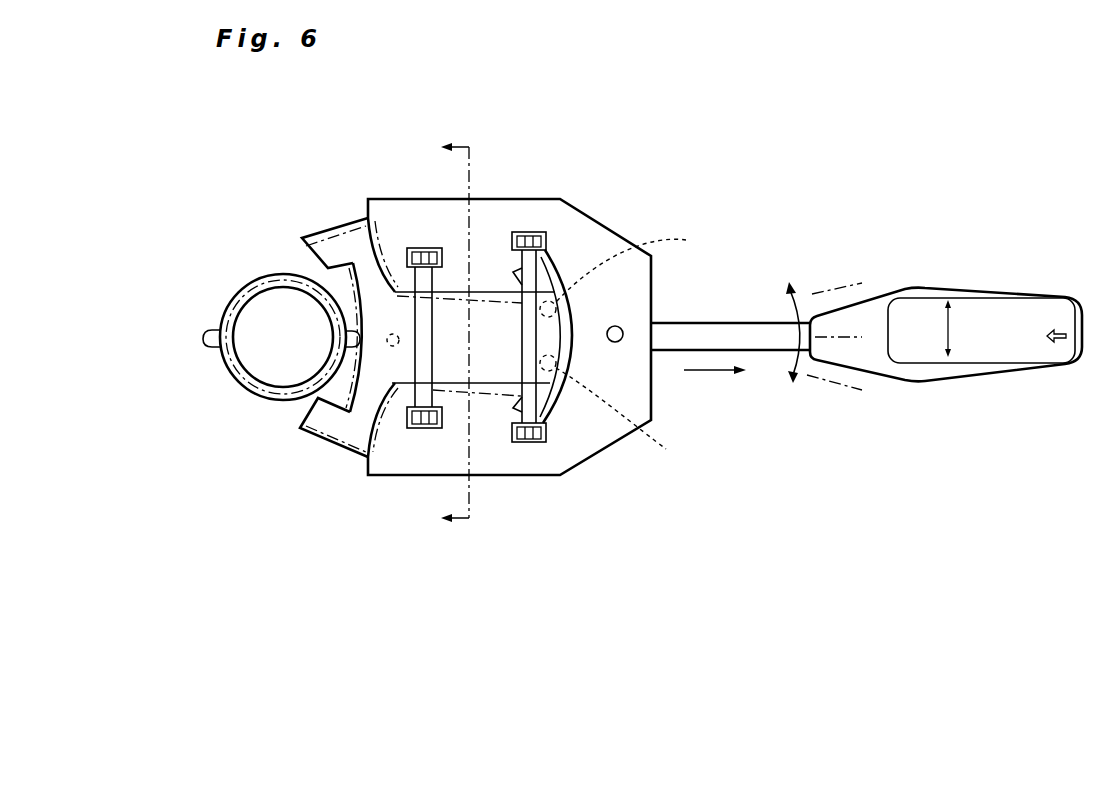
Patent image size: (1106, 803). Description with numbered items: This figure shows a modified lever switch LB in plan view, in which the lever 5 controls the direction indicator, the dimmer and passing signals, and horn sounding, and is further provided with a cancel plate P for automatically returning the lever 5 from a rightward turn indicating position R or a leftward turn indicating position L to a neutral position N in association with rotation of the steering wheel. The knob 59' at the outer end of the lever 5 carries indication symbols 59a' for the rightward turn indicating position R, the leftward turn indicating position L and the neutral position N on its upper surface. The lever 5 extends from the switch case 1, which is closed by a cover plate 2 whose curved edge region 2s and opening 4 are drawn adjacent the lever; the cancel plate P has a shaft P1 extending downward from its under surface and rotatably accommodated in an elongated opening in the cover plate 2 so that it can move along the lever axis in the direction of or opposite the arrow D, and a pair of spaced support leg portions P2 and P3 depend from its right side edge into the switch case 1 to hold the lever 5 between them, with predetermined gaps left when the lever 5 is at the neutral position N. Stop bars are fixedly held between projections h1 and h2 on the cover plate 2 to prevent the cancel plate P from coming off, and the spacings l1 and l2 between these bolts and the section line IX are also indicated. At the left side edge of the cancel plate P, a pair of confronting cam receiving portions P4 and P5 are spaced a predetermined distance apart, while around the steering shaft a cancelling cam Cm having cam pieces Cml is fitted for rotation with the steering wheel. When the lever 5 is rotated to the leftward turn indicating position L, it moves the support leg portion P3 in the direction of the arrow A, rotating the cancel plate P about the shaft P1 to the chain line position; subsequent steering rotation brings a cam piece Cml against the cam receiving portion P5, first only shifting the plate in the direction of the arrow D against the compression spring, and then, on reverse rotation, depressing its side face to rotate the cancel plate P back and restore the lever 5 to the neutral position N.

The switch case 1 is at (503, 193).
The cover plate 2 is at (551, 208).
The curved surface of switch body 2s is at (556, 265).
The pivot hole 4 is at (621, 328).
The lever 5 is at (746, 326).
The lever switch LB is at (748, 185).
The knob 59' is at (946, 297).
The indication symbols 59a' is at (981, 288).
The projection h1 is at (424, 256).
The projection h2 is at (547, 243).
The cancel plate P is at (490, 300).
The shaft P1 is at (394, 345).
The support leg portion P2 is at (631, 272).
The support leg portion P3 is at (618, 414).
The cam receiving portion P4 is at (308, 245).
The cam receiving portion P5 is at (300, 428).
The cancelling cam Cm is at (240, 385).
The cam piece Cml is at (357, 332).
The distance l1 is at (428, 322).
The distance l2 is at (524, 322).
The section line IX is at (454, 336).
The leftward turn indicating position L is at (845, 285).
The neutral position N is at (849, 339).
The rightward turn indicating position R is at (845, 396).
The arrow D is at (713, 373).
The arrow A is at (797, 368).